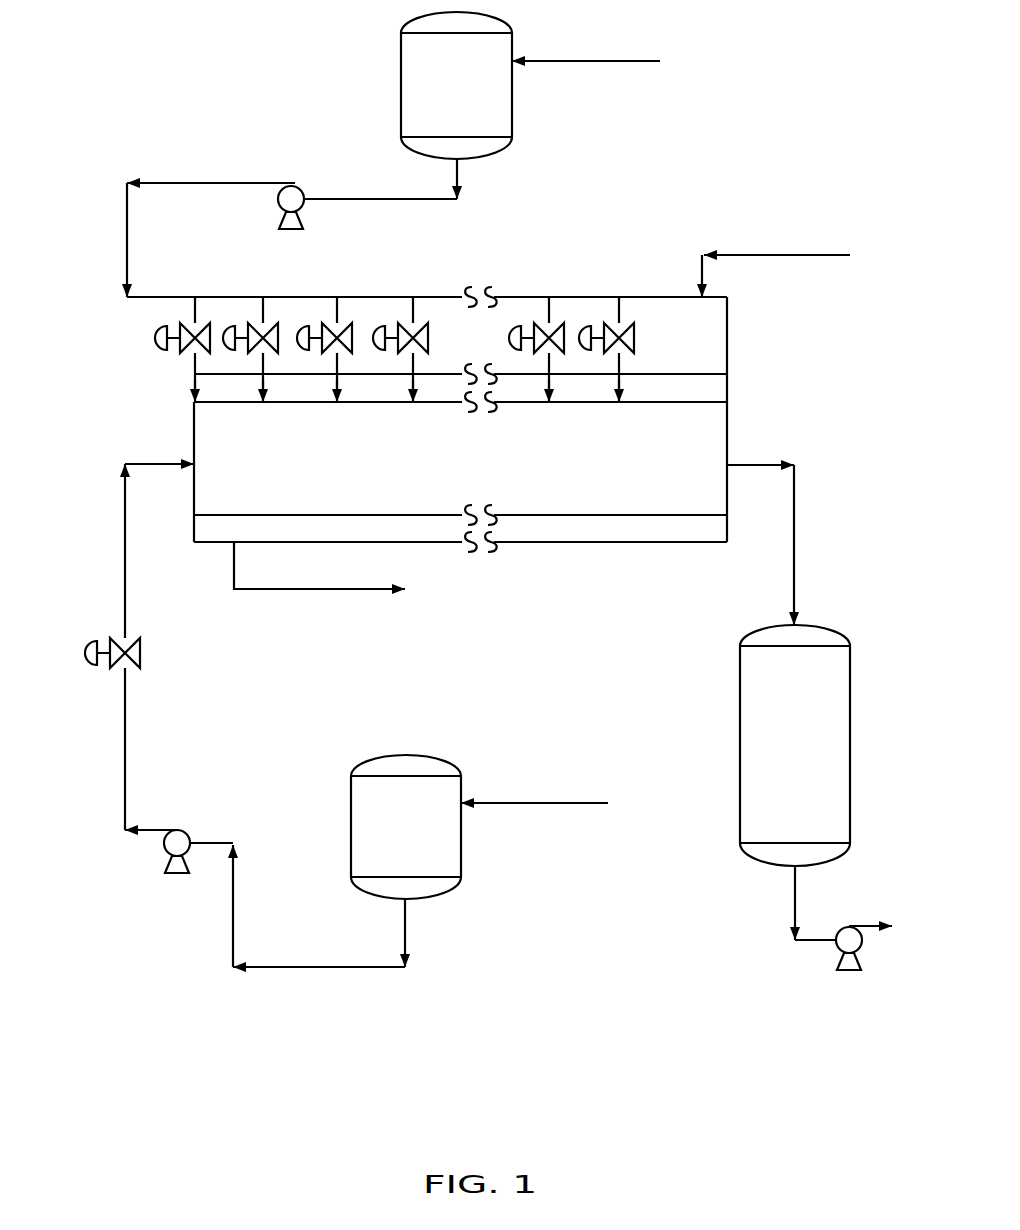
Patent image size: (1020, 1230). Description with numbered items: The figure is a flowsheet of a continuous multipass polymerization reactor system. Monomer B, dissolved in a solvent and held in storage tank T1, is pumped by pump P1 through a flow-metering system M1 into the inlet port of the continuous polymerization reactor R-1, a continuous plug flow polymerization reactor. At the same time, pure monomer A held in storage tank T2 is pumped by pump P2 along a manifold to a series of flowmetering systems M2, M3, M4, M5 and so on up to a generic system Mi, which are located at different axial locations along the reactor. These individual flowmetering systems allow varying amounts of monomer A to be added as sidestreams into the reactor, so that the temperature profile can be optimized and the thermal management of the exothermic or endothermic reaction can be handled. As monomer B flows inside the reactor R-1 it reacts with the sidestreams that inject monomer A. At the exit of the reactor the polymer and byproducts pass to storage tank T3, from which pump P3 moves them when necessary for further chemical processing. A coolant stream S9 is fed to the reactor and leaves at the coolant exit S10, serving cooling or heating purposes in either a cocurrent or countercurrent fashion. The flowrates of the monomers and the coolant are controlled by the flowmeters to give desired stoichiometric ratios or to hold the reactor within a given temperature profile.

The storage tank T1 is at (451, 866).
The storage tank T2 is at (501, 110).
The storage tank T3 is at (767, 702).
The pump P1 is at (265, 898).
The pump P2 is at (292, 224).
The pump P3 is at (844, 969).
The flow-metering system M1 is at (125, 647).
The flowmetering system M2 is at (182, 333).
The flowmetering system M3 is at (250, 333).
The flowmetering system M4 is at (324, 333).
The flowmetering system M5 is at (400, 333).
The flowmetering system Mi is at (536, 333).
The continuous polymerization reactor R-1 is at (427, 390).
The coolant stream S9 is at (776, 263).
The coolant exit S10 is at (319, 584).